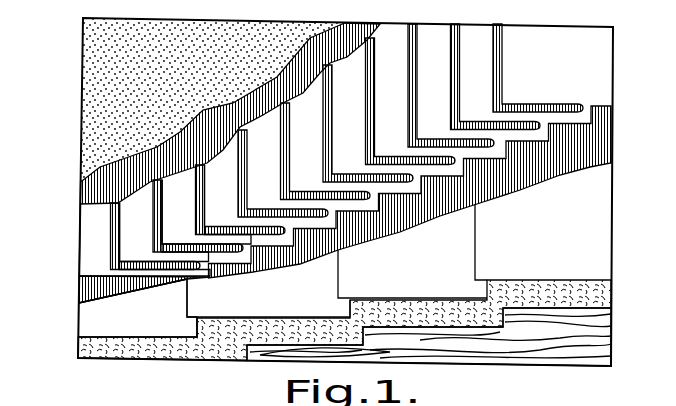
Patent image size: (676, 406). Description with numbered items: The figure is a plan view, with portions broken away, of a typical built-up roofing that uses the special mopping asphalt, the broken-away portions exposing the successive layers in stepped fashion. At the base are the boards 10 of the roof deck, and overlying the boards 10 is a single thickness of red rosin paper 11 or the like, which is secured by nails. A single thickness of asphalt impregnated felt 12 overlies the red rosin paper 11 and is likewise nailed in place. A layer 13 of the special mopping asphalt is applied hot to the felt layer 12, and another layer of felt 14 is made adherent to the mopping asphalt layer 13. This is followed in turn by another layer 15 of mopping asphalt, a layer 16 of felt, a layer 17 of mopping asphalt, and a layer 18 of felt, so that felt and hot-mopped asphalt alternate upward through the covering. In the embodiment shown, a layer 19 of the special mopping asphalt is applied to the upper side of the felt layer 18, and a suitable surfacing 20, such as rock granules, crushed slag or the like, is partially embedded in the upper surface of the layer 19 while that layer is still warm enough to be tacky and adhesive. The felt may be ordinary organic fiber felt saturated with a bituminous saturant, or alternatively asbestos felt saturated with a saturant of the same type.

The boards 10 is at (552, 332).
The red rosin paper 11 is at (111, 348).
The asphalt impregnated felt 12 is at (97, 322).
The layer of mopping asphalt 13 is at (97, 284).
The layer of felt 14 is at (97, 283).
The layer of mopping asphalt 15 is at (97, 267).
The layer of felt 16 is at (138, 230).
The layer of mopping asphalt 17 is at (157, 212).
The layer of felt 18 is at (177, 190).
The layer of mopping asphalt 19 is at (107, 180).
The surfacing 20 is at (110, 80).